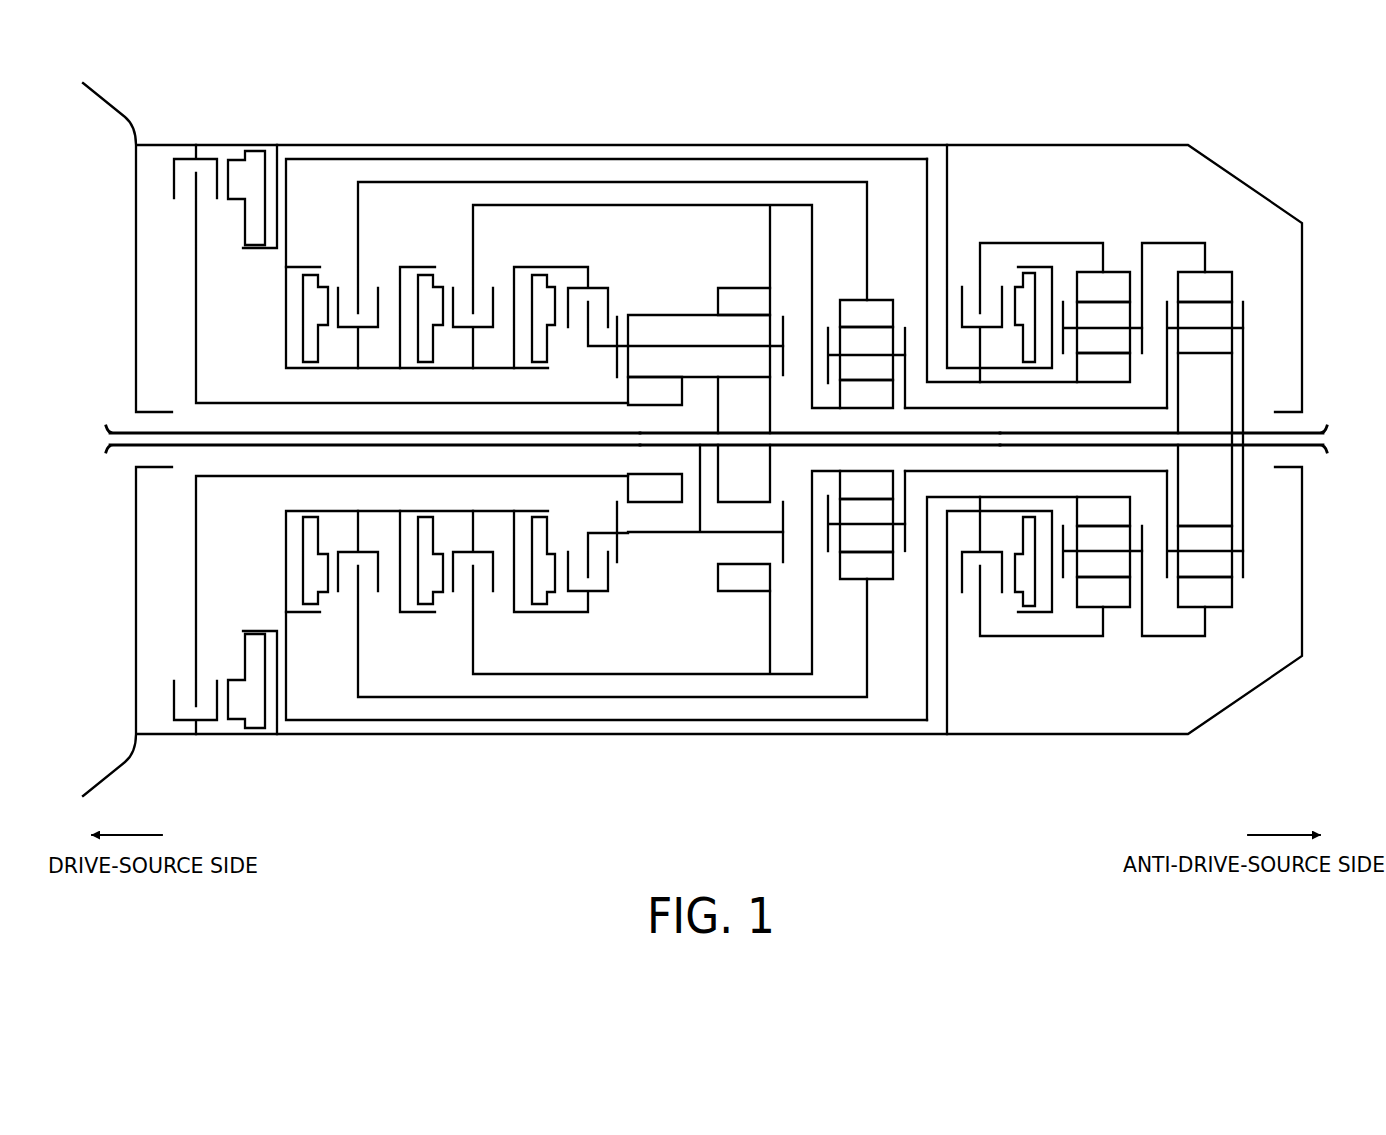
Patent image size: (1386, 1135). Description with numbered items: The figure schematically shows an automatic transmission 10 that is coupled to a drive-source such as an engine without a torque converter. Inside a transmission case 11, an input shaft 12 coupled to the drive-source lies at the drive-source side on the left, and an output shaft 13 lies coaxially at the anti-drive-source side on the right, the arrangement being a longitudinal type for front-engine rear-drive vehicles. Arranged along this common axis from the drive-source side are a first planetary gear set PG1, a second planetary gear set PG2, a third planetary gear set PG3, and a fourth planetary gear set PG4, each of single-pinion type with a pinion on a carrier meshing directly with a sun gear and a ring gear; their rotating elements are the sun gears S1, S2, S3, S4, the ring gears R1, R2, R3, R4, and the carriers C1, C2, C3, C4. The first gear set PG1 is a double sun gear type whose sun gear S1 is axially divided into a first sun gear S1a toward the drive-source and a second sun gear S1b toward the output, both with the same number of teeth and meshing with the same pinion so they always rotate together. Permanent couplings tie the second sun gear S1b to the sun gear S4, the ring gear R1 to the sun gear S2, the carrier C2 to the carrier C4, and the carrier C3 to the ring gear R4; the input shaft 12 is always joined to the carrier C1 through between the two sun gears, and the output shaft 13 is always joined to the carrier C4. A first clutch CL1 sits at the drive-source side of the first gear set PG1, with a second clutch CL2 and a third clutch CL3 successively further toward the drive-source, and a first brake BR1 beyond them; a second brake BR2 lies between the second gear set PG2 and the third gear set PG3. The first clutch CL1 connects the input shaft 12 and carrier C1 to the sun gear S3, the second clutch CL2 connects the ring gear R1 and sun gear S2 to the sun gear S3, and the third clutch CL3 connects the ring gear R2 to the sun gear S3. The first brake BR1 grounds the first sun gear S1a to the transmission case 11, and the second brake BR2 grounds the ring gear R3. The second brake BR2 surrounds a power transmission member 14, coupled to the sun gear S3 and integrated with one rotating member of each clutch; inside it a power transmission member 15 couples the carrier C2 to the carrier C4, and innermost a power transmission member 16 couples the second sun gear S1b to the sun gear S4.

The automatic transmission 10 is at (1282, 120).
The transmission case 11 is at (805, 138).
The input shaft 12 is at (125, 430).
The output shaft 13 is at (1318, 428).
The power transmission member 14 is at (992, 383).
The power transmission member 15 is at (942, 410).
The power transmission member 16 is at (788, 448).
The first brake BR1 is at (186, 204).
The second brake BR2 is at (967, 270).
The first clutch CL1 is at (606, 278).
The second clutch CL2 is at (466, 280).
The third clutch CL3 is at (348, 278).
The first planetary gear set PG1 is at (682, 404).
The second planetary gear set PG2 is at (877, 398).
The third planetary gear set PG3 is at (1134, 422).
The fourth planetary gear set PG4 is at (1218, 407).
The ring gear R1 is at (744, 439).
The ring gear R2 is at (866, 439).
The ring gear R3 is at (1103, 439).
The ring gear R4 is at (1205, 439).
The sun gear S1 is at (666, 436).
The first sun gear S1a is at (655, 439).
The second sun gear S1b is at (744, 439).
The sun gear S2 is at (866, 439).
The sun gear S3 is at (1103, 439).
The sun gear S4 is at (1205, 439).
The carrier C1 is at (787, 439).
The carrier C2 is at (911, 426).
The carrier C3 is at (1138, 233).
The carrier C4 is at (1250, 426).